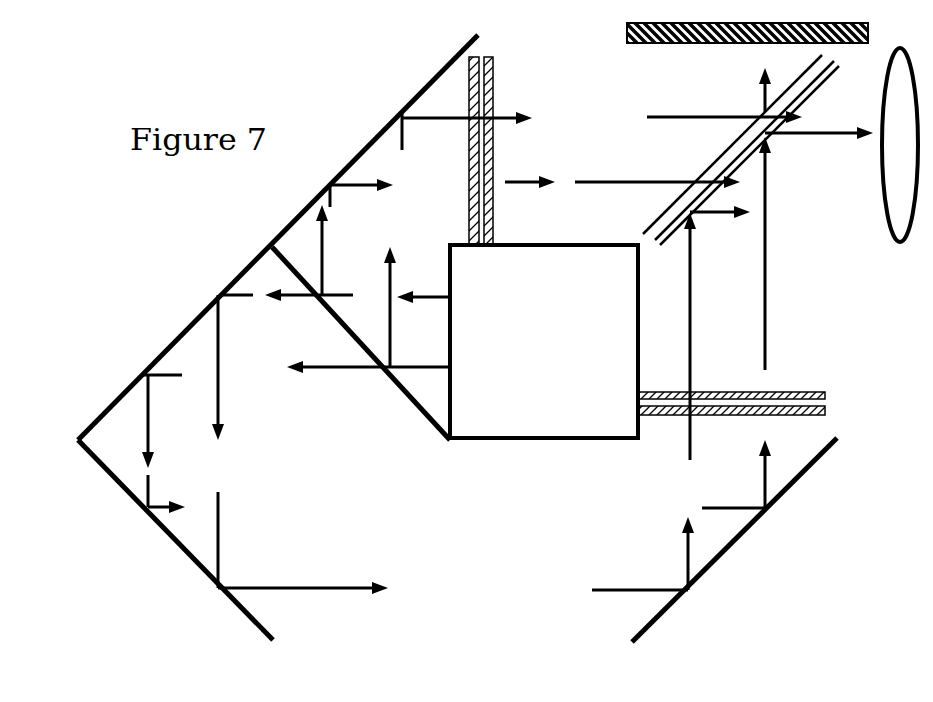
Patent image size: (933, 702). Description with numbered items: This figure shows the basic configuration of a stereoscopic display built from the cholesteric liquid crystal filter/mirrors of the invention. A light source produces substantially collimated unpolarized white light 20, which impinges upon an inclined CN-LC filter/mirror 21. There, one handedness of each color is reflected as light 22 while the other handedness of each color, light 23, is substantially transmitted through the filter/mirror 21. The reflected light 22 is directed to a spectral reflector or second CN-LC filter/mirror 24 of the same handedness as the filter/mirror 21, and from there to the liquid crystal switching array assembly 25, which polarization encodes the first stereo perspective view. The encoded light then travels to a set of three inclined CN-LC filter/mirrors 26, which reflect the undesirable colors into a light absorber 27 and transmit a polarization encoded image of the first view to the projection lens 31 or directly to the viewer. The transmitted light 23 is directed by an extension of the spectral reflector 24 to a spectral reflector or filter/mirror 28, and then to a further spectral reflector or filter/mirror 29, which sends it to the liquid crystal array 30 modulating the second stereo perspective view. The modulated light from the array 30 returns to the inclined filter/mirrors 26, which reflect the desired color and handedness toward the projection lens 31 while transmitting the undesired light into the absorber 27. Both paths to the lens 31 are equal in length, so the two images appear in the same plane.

The light 20 is at (440, 302).
The CN-LC filter/mirror 21 is at (343, 327).
The reflected light 22 is at (327, 247).
The transmitted light 23 is at (343, 367).
The spectral reflector 24 is at (357, 157).
The liquid crystal switching array assembly 25 is at (470, 123).
The inclined CN-LC filter/mirrors 26 is at (710, 167).
The light absorber 27 is at (645, 48).
The spectral reflector 28 is at (197, 565).
The spectral reflector 29 is at (650, 620).
The liquid crystal array 30 is at (742, 415).
The projection lens 31 is at (898, 240).